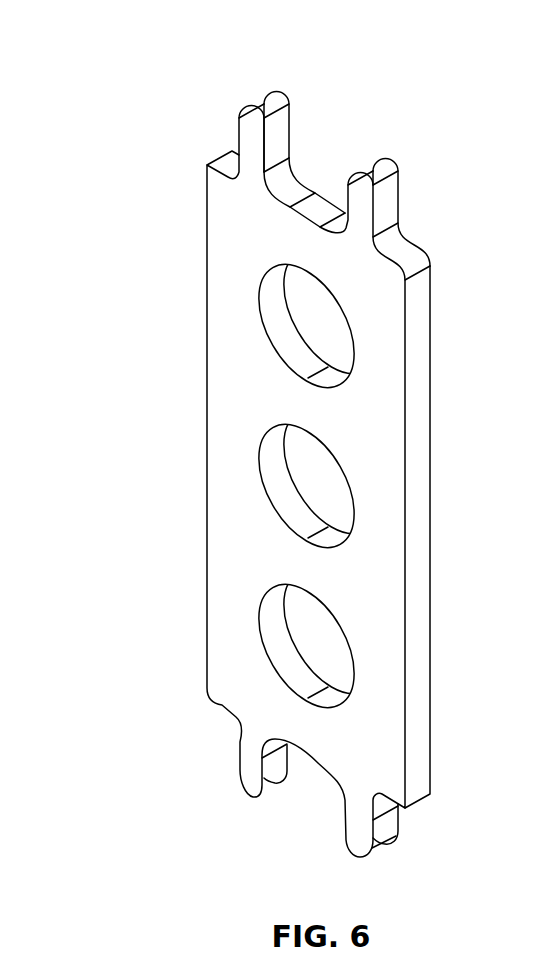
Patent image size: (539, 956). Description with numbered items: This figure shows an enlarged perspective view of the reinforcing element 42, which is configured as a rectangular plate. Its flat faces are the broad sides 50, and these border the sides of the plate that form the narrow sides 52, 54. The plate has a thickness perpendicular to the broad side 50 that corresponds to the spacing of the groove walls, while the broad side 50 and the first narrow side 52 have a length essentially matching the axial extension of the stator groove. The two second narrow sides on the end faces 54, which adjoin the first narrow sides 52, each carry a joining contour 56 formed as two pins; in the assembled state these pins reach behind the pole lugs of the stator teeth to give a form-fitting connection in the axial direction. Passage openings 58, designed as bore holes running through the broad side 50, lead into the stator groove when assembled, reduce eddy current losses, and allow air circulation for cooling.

The reinforcing element 42 is at (311, 459).
The broad side 50 is at (248, 555).
The first narrow side 52 is at (417, 448).
The second narrow side on the end face 54 is at (320, 207).
The joining contour 56 is at (275, 106).
The passage openings 58 is at (318, 318).